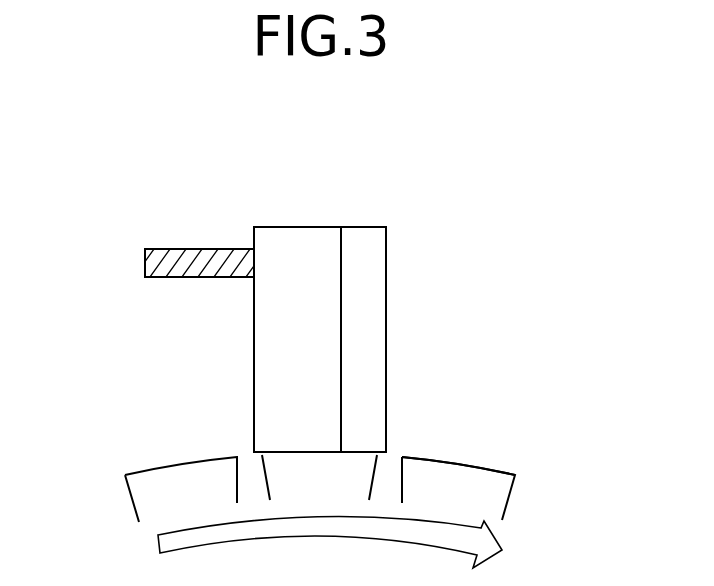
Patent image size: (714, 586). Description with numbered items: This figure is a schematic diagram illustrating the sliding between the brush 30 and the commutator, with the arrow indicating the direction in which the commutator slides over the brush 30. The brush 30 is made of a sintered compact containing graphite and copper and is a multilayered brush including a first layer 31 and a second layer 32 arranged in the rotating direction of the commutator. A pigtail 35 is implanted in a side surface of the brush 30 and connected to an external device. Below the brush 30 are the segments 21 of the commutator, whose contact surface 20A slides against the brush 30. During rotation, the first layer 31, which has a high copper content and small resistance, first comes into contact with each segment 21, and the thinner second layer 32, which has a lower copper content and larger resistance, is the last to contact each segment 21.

The brush 30 is at (266, 138).
The first layer 31 is at (292, 226).
The second layer 32 is at (362, 226).
The pigtail 35 is at (172, 249).
The segment 21 is at (143, 473).
The contact surface 20A is at (500, 472).